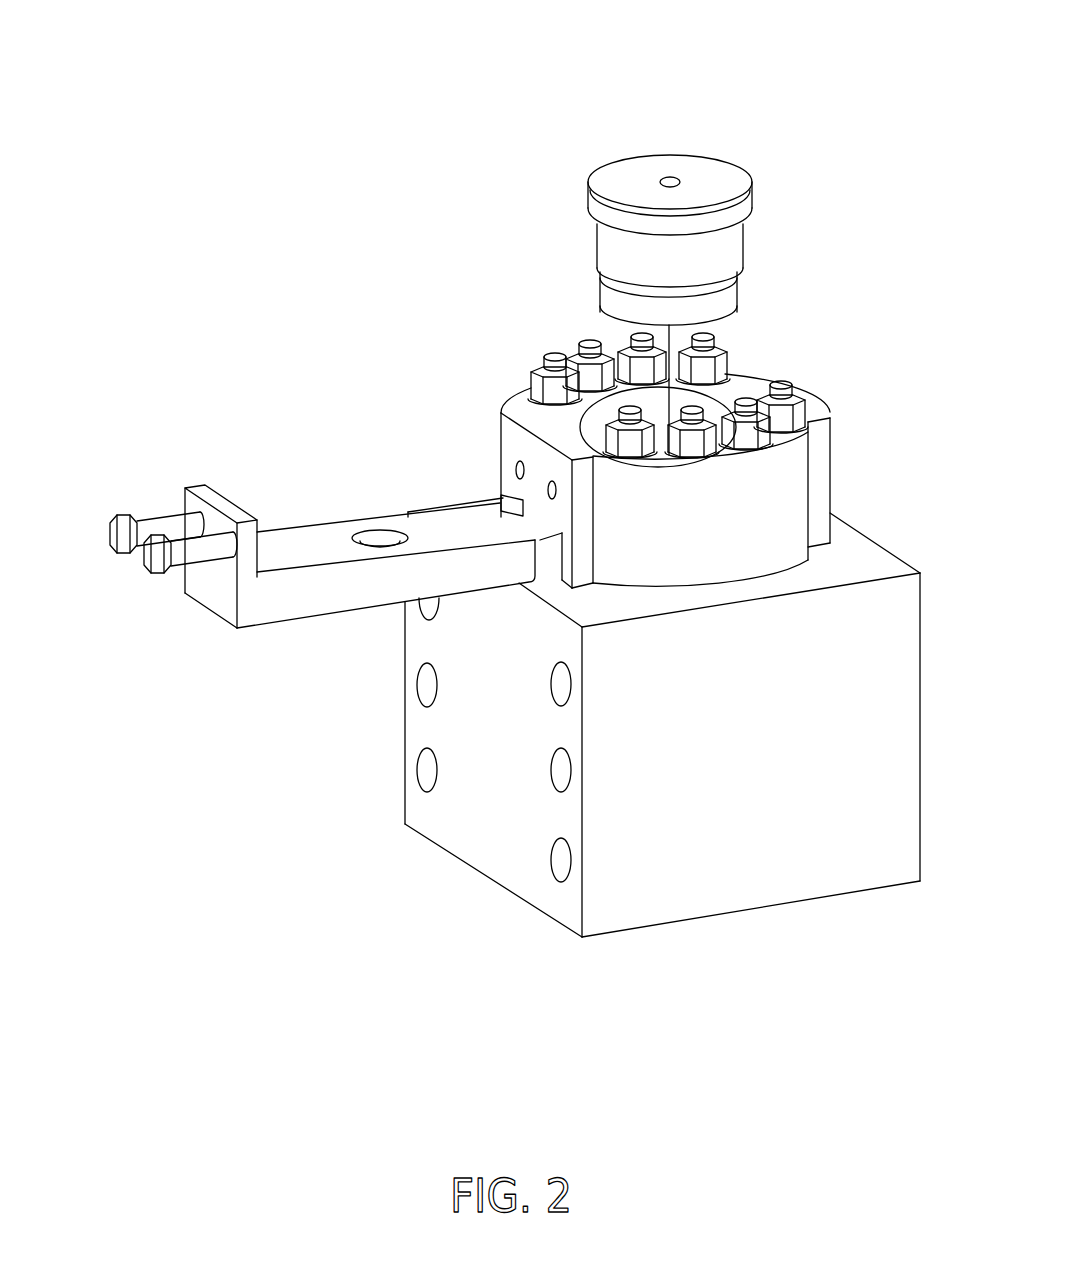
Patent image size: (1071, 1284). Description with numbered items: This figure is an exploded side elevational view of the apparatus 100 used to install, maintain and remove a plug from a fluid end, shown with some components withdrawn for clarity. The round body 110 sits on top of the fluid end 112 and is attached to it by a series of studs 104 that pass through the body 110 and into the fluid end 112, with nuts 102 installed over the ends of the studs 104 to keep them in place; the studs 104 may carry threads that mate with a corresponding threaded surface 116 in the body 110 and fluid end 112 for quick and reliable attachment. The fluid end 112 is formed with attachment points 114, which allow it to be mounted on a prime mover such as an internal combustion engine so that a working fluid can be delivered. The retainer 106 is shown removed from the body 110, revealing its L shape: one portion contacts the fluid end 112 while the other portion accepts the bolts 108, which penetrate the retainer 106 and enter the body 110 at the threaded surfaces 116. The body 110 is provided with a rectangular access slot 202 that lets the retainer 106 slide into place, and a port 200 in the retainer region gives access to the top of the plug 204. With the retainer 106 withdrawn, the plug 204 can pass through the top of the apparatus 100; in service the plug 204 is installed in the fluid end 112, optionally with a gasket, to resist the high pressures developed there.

The apparatus 100 is at (862, 193).
The nuts 102 is at (530, 383).
The studs 104 is at (587, 342).
The retainer 106 is at (192, 480).
The bolts 108 is at (143, 568).
The body 110 is at (783, 505).
The fluid end 112 is at (598, 900).
The attachment points 114 is at (418, 787).
The threaded surface 116 is at (515, 470).
The port 200 is at (378, 543).
The access slot 202 is at (523, 505).
The plug 204 is at (597, 207).